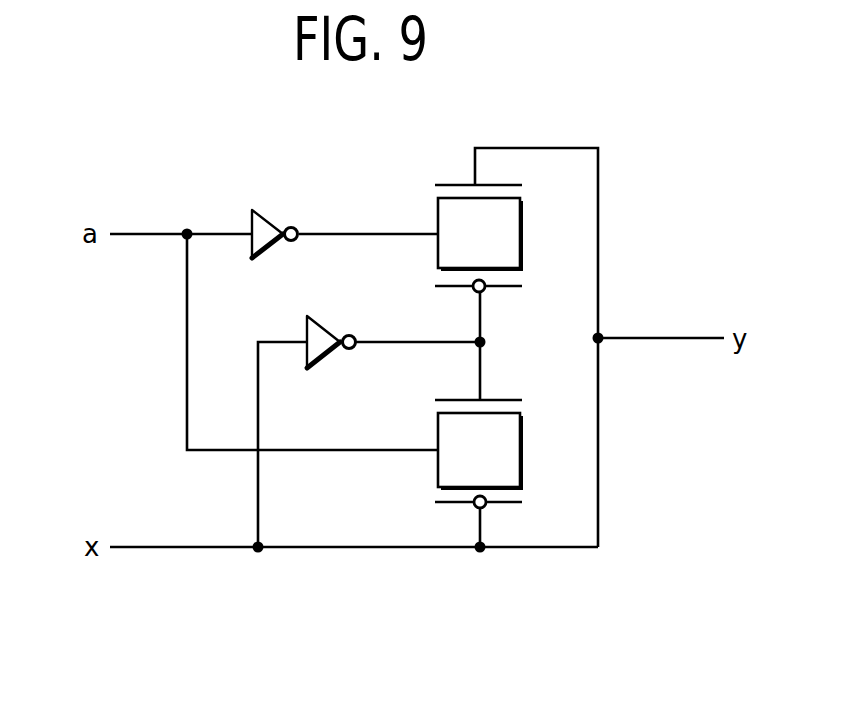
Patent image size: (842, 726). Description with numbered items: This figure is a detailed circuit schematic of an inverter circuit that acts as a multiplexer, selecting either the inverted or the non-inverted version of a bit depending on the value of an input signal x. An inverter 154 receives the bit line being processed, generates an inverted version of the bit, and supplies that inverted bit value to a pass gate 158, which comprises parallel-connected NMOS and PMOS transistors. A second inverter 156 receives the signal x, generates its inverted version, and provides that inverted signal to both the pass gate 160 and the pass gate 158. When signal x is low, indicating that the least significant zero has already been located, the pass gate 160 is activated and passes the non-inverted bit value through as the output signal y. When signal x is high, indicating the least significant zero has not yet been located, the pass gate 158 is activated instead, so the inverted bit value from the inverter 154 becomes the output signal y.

The inverter 154 is at (270, 228).
The inverter 156 is at (328, 334).
The pass gate 158 is at (501, 246).
The pass gate 160 is at (501, 463).